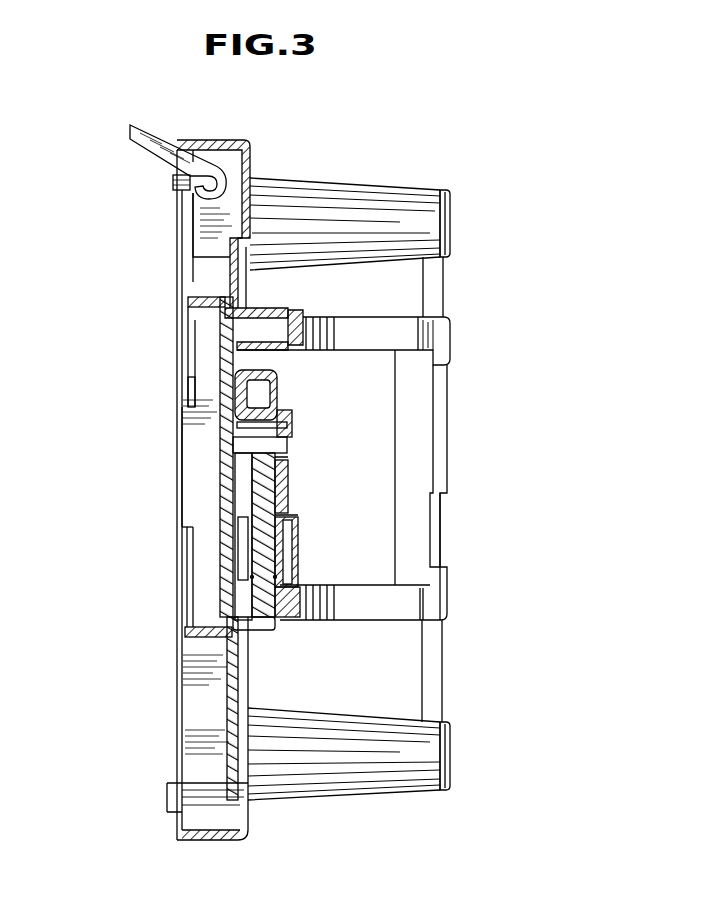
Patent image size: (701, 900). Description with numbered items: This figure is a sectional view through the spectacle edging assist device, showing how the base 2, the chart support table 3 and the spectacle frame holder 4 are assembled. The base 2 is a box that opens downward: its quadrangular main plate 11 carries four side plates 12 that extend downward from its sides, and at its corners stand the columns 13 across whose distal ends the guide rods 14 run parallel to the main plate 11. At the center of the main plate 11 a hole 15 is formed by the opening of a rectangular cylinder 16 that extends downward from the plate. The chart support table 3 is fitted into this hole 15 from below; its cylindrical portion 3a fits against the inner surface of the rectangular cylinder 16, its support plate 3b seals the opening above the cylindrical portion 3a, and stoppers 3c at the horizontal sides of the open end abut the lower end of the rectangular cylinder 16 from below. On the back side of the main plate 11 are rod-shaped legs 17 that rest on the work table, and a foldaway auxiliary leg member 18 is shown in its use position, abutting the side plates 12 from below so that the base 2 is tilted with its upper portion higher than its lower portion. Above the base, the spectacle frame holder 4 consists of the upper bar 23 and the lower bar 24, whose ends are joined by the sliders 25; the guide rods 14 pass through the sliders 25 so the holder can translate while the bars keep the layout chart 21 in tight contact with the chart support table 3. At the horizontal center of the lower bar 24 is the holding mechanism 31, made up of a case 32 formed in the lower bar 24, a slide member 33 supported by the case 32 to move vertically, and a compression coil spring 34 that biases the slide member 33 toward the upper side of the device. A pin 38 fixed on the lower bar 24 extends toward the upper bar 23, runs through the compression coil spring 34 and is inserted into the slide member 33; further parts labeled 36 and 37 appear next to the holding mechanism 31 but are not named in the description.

The base 2 is at (236, 142).
The chart support table 3 is at (159, 515).
The cylindrical portion 3a is at (190, 342).
The support plate 3b is at (220, 423).
The stoppers 3c is at (178, 481).
The spectacle frame holder 4 is at (442, 421).
The main plate 11 is at (286, 195).
The side plates 12 is at (188, 142).
The columns 13 is at (378, 188).
The guide rods 14 is at (442, 690).
The hole 15 is at (220, 347).
The rectangular cylinder 16 is at (205, 297).
The legs 17 is at (177, 800).
The auxiliary leg member 18 is at (128, 134).
The layout chart 21 is at (237, 362).
The upper bar 23 is at (346, 316).
The lower bar 24 is at (360, 622).
The sliders 25 is at (433, 547).
The holding mechanism 31 is at (310, 522).
The case 32 is at (297, 555).
The slide member 33 is at (280, 462).
The compression coil spring 34 is at (294, 470).
The seal ring 36 is at (280, 390).
The retainer 37 is at (280, 423).
The pin 38 is at (250, 610).